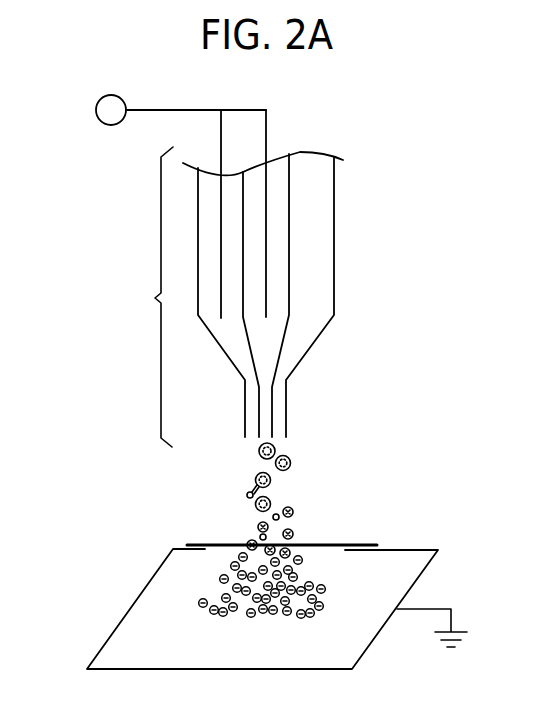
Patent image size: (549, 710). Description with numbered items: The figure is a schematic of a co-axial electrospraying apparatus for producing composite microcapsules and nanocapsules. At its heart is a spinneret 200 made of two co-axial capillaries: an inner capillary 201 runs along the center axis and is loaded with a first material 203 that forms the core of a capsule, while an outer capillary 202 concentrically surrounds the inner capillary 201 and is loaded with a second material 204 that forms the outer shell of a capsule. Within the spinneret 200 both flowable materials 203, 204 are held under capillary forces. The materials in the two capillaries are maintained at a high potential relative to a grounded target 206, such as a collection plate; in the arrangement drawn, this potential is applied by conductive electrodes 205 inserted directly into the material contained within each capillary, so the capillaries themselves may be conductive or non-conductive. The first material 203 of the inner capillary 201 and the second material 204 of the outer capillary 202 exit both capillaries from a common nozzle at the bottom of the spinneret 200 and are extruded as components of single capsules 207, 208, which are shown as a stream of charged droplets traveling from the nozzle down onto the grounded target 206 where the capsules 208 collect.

The spinneret 200 is at (139, 297).
The inner capillary 201 is at (294, 212).
The outer capillary 202 is at (335, 272).
The first material 203 is at (275, 262).
The second material 204 is at (319, 290).
The conductive electrodes 205 is at (225, 135).
The grounded target 206 is at (117, 627).
The capsule 207 is at (298, 477).
The capsule 208 is at (225, 563).